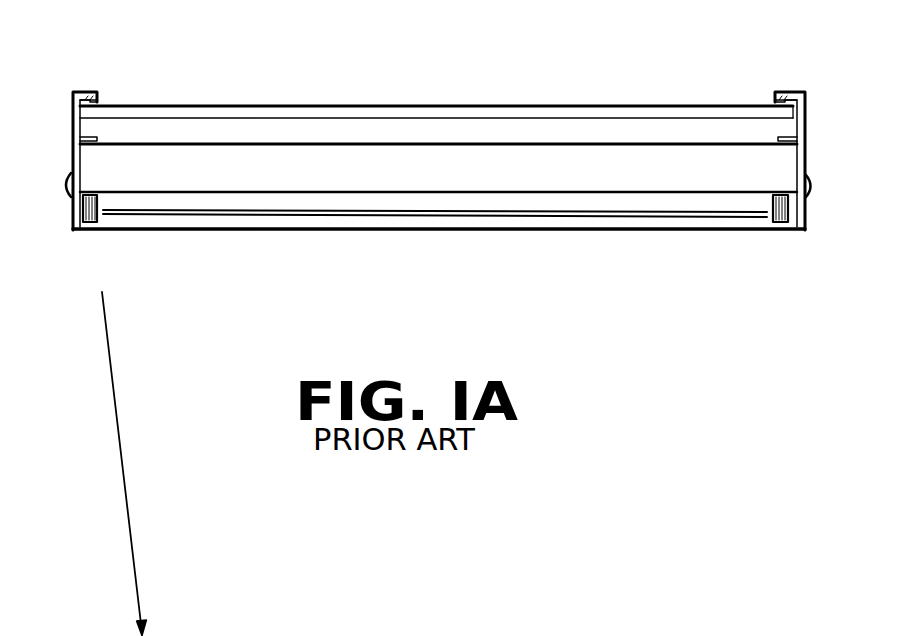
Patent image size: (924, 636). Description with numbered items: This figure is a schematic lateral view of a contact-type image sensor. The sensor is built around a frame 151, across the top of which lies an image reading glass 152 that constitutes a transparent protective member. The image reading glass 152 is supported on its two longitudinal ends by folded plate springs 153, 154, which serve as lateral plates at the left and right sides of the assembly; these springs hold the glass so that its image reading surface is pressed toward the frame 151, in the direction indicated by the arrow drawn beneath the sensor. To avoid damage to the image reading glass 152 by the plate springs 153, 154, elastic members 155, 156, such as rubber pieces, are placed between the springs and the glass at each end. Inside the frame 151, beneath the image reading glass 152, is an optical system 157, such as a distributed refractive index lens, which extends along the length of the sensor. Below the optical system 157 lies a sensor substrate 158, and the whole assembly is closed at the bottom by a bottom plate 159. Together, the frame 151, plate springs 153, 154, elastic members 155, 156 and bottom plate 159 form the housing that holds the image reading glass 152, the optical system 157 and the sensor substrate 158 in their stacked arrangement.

The frame 151 is at (635, 135).
The image reading glass 152 is at (540, 112).
The plate spring 153 is at (73, 91).
The plate spring 154 is at (788, 93).
The elastic member 155 is at (98, 102).
The elastic member 156 is at (772, 102).
The optical system 157 is at (242, 180).
The sensor substrate 158 is at (155, 217).
The bottom plate 159 is at (340, 225).